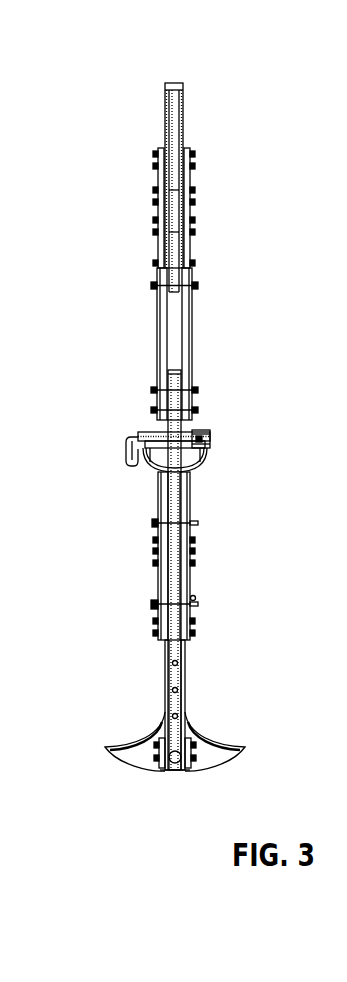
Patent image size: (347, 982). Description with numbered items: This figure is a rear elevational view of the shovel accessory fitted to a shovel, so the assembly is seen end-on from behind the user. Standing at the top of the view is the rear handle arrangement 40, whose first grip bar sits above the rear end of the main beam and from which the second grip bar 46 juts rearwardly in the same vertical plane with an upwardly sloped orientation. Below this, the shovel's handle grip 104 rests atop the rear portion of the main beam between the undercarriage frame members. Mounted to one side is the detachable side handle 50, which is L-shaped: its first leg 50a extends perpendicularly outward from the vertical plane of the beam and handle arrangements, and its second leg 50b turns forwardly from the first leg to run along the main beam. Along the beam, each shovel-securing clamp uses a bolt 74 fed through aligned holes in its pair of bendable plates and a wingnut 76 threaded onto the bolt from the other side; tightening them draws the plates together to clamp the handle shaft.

The rear handle arrangement 40 is at (188, 112).
The second grip bar 46 is at (177, 127).
The detachable side handle 50 is at (173, 436).
The first leg 50a is at (143, 428).
The second leg 50b is at (127, 462).
The handle grip 104 is at (205, 430).
The bolt 74 is at (158, 523).
The wingnut 76 is at (192, 515).